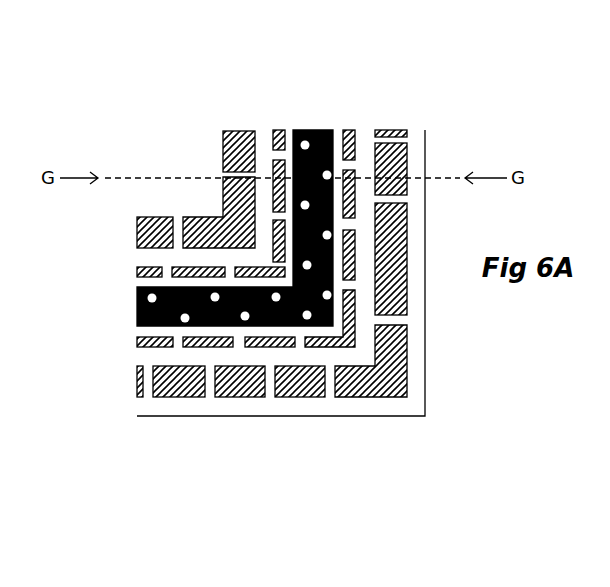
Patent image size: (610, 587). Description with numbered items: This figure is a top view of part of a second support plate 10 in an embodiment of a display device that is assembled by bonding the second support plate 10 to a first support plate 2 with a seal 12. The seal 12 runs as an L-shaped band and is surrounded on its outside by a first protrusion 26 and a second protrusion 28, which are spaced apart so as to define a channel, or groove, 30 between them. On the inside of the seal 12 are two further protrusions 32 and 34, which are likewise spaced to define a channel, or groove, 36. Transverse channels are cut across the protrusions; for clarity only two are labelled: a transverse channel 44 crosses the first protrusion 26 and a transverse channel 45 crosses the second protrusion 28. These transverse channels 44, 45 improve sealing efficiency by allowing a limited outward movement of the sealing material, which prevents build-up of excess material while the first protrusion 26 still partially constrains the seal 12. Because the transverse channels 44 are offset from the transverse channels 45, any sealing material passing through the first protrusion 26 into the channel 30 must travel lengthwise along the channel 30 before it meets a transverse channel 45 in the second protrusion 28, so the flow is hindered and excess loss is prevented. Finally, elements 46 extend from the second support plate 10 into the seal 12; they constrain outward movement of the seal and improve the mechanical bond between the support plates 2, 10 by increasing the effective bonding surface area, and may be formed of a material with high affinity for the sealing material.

The second support plate 10 is at (407, 416).
The seal 12 is at (315, 130).
The first support plate 2 is at (137, 323).
The first protrusion 26 is at (350, 130).
The second protrusion 28 is at (392, 130).
The channel 30 is at (367, 130).
The protrusion 32 is at (280, 130).
The protrusion 34 is at (237, 130).
The channel 36 is at (263, 130).
The transverse channel 44 is at (250, 348).
The transverse channel 45 is at (212, 402).
The elements 46 is at (138, 297).